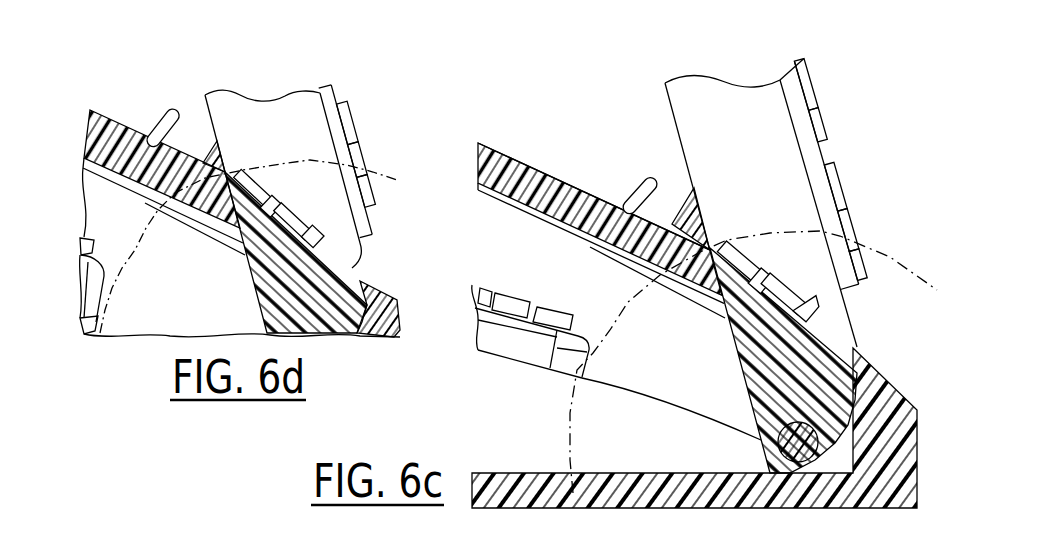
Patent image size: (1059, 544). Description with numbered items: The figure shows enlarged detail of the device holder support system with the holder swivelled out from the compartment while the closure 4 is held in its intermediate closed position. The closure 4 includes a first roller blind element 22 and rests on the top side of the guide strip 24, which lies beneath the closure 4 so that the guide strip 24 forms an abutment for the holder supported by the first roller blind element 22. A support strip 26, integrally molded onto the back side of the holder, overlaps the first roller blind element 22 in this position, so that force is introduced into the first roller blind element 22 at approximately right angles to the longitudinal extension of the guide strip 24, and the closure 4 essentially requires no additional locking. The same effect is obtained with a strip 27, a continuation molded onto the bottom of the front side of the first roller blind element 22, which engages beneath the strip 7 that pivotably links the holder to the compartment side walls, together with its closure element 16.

In FIG. 6D, the closure 4 is at (123, 112).
In FIG. 6C, the closure 4 is at (565, 158).
In FIG. 6C, the first roller blind element 22 is at (687, 258).
In FIG. 6D, the guide strip 24 is at (138, 205).
In FIG. 6C, the guide strip 24 is at (597, 241).
In FIG. 6C, the support strip 26 is at (697, 196).
In FIG. 6D, the strip 27 is at (200, 220).
In FIG. 6C, the closure element 16 is at (802, 292).
In FIG. 6D, the strip 7 is at (370, 290).